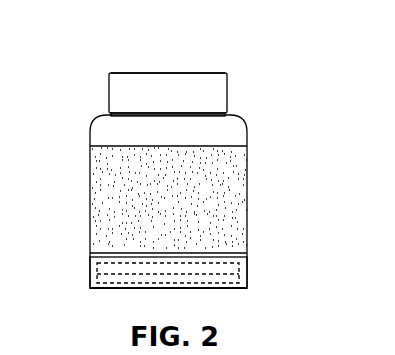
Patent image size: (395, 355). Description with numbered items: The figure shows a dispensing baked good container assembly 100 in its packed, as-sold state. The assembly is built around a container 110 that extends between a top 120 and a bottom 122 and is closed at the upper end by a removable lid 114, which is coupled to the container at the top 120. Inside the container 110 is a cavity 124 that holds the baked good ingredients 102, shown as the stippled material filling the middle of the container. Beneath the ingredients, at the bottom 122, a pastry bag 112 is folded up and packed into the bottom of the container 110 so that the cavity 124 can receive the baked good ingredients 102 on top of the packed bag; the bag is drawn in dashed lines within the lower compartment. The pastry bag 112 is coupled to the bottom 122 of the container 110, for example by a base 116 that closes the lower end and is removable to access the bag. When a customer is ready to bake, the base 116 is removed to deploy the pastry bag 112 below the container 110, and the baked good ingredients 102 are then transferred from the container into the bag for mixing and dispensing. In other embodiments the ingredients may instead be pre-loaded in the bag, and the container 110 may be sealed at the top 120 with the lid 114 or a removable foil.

The container assembly 100 is at (293, 46).
The container 110 is at (90, 133).
The lid 114 is at (222, 88).
The top 120 is at (210, 73).
The cavity 124 is at (217, 131).
The baked good ingredients 102 is at (226, 178).
The base 116 is at (247, 270).
The pastry bag 112 is at (106, 273).
The bottom 122 is at (233, 288).